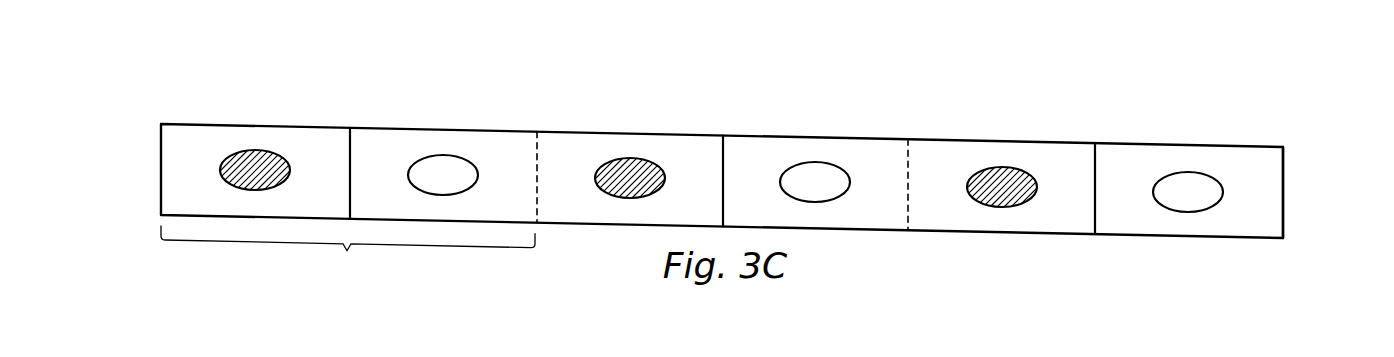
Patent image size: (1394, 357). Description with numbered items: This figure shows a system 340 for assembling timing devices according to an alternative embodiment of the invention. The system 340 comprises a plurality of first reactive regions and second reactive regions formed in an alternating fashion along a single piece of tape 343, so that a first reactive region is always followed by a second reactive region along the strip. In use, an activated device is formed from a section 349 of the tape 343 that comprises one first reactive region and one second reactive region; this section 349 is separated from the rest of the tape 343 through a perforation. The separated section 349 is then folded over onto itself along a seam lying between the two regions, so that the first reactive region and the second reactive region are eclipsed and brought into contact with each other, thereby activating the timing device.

The system 340 is at (145, 92).
The tape 343 is at (1285, 192).
The section 349 is at (348, 254).